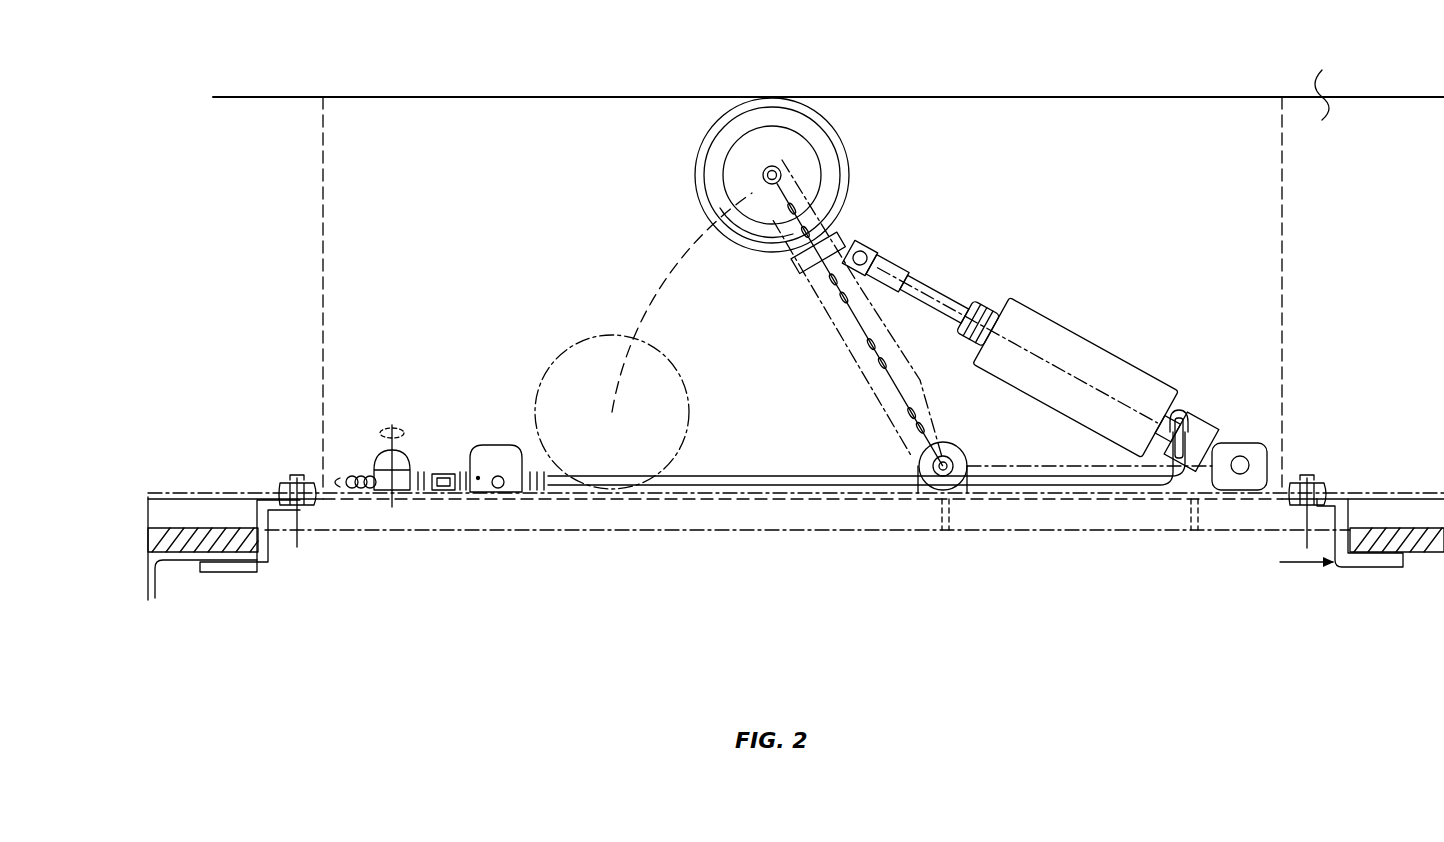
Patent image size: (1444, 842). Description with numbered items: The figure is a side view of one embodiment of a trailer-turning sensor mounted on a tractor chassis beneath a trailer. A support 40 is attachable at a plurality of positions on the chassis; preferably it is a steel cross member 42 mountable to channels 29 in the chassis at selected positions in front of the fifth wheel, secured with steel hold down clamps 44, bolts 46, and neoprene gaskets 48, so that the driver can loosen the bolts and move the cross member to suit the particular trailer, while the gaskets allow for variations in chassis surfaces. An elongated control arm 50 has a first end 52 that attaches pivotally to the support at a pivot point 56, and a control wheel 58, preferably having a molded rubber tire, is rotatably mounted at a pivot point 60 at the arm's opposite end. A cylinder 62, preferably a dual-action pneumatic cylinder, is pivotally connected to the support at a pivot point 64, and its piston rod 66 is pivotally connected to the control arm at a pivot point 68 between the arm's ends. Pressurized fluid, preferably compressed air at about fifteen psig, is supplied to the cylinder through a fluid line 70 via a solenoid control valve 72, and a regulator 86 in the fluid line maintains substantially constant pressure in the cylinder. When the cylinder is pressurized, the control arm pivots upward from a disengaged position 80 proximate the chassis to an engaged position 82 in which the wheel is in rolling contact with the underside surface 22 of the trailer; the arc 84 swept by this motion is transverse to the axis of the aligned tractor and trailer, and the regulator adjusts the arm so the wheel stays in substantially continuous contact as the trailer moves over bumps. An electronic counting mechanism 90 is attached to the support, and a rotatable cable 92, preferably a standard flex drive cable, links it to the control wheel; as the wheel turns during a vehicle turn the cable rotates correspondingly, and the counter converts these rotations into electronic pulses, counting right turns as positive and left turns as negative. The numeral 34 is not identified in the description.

The underside surface 22 is at (1075, 95).
The channels 29 is at (158, 590).
The axle 34 is at (793, 240).
The support 40 is at (480, 520).
The cross member 42 is at (555, 520).
The hold down clamps 44 is at (270, 560).
The bolts 46 is at (292, 476).
The neoprene gaskets 48 is at (176, 543).
The control arm 50 is at (835, 332).
The first end 52 is at (877, 401).
The pivot point 56 is at (917, 463).
The control wheel 58 is at (851, 178).
The pivot point 60 is at (762, 172).
The cylinder 62 is at (1054, 316).
The pivot point 64 is at (1192, 418).
The piston rod 66 is at (938, 292).
The pivot point 68 is at (866, 243).
The fluid line 70 is at (1031, 500).
The solenoid control valve 72 is at (505, 444).
The disengaged position 80 is at (601, 402).
The engaged position 82 is at (754, 175).
The arc 84 is at (667, 274).
The regulator 86 is at (385, 452).
The electronic counting mechanism 90 is at (1242, 440).
The rotatable cable 92 is at (1050, 473).